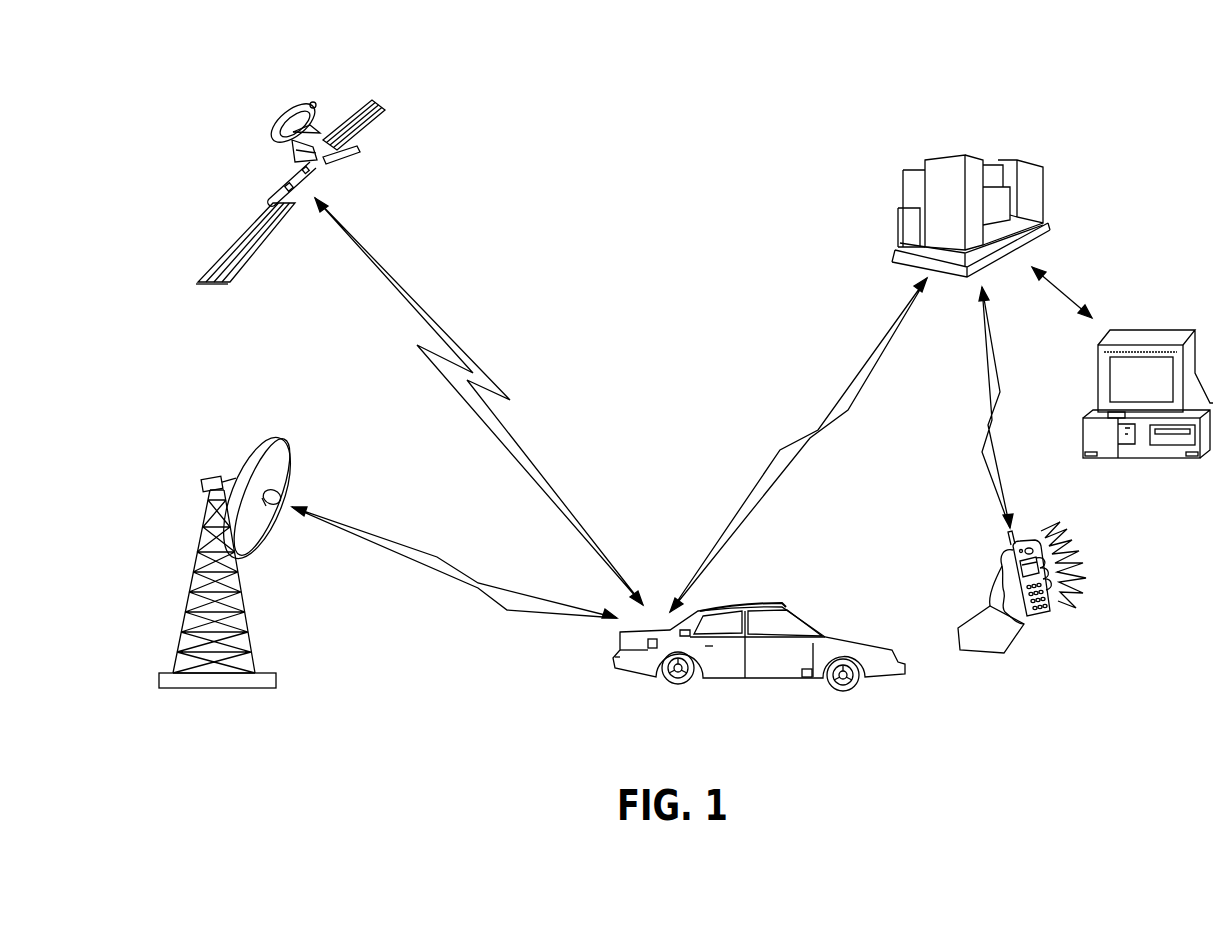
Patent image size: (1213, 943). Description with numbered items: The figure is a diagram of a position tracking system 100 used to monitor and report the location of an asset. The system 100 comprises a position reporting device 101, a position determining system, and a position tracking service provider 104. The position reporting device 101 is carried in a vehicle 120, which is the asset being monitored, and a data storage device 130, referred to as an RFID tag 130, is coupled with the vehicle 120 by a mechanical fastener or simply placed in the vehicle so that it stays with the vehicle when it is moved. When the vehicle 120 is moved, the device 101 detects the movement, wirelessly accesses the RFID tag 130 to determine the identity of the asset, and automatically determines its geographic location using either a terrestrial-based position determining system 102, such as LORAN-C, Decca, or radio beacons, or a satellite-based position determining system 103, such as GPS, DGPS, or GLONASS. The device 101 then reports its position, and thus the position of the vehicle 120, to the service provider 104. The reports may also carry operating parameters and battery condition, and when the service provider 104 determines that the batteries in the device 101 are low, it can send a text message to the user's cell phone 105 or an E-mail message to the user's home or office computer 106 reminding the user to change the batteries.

The position tracking system 100 is at (659, 70).
The position reporting device 101 is at (636, 659).
The terrestrial-based position determining system 102 is at (224, 445).
The satellite-based position determining system 103 is at (262, 108).
The position tracking service provider 104 is at (887, 166).
The cell phone 105 is at (1049, 631).
The home or office computer 106 is at (1148, 310).
The vehicle 120 is at (867, 652).
The data storage device 130 is at (799, 690).